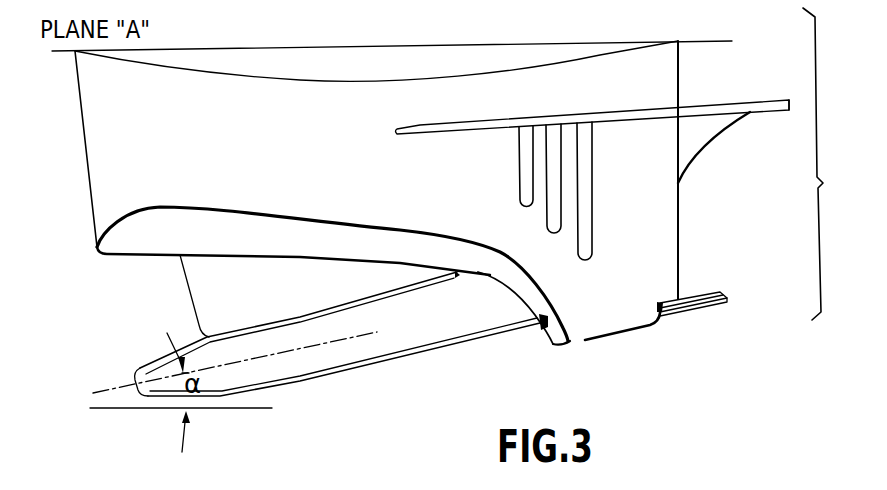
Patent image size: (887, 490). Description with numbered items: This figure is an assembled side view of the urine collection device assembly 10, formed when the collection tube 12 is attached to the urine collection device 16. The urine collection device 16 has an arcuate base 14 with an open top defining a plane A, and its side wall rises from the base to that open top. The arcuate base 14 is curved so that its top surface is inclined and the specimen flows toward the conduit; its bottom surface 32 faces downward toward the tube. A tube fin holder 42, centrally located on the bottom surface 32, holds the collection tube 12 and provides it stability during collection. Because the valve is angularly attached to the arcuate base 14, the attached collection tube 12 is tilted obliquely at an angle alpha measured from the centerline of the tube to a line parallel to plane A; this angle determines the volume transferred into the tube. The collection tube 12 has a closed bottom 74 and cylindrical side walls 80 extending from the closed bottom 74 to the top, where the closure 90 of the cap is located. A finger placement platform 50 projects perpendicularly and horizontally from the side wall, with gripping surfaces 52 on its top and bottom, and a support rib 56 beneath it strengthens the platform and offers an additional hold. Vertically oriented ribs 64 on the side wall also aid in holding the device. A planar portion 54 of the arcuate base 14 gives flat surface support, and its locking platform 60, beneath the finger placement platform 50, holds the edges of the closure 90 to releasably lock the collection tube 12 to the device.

The urine collection device assembly 10 is at (826, 164).
The collection tube 12 is at (297, 414).
The arcuate base 14 is at (392, 233).
The urine collection device 16 is at (70, 190).
The bottom surface 32 is at (158, 227).
The tube fin holder 42 is at (215, 300).
The finger placement platform 50 is at (793, 100).
The gripping surfaces 52 is at (750, 100).
The planar portion 54 is at (617, 339).
The support rib 56 is at (697, 142).
The locking platform 60 is at (668, 300).
The ribs 64 is at (530, 204).
The closed bottom 74 is at (140, 390).
The cylindrical side walls 80 is at (353, 348).
The closure 90 is at (703, 306).